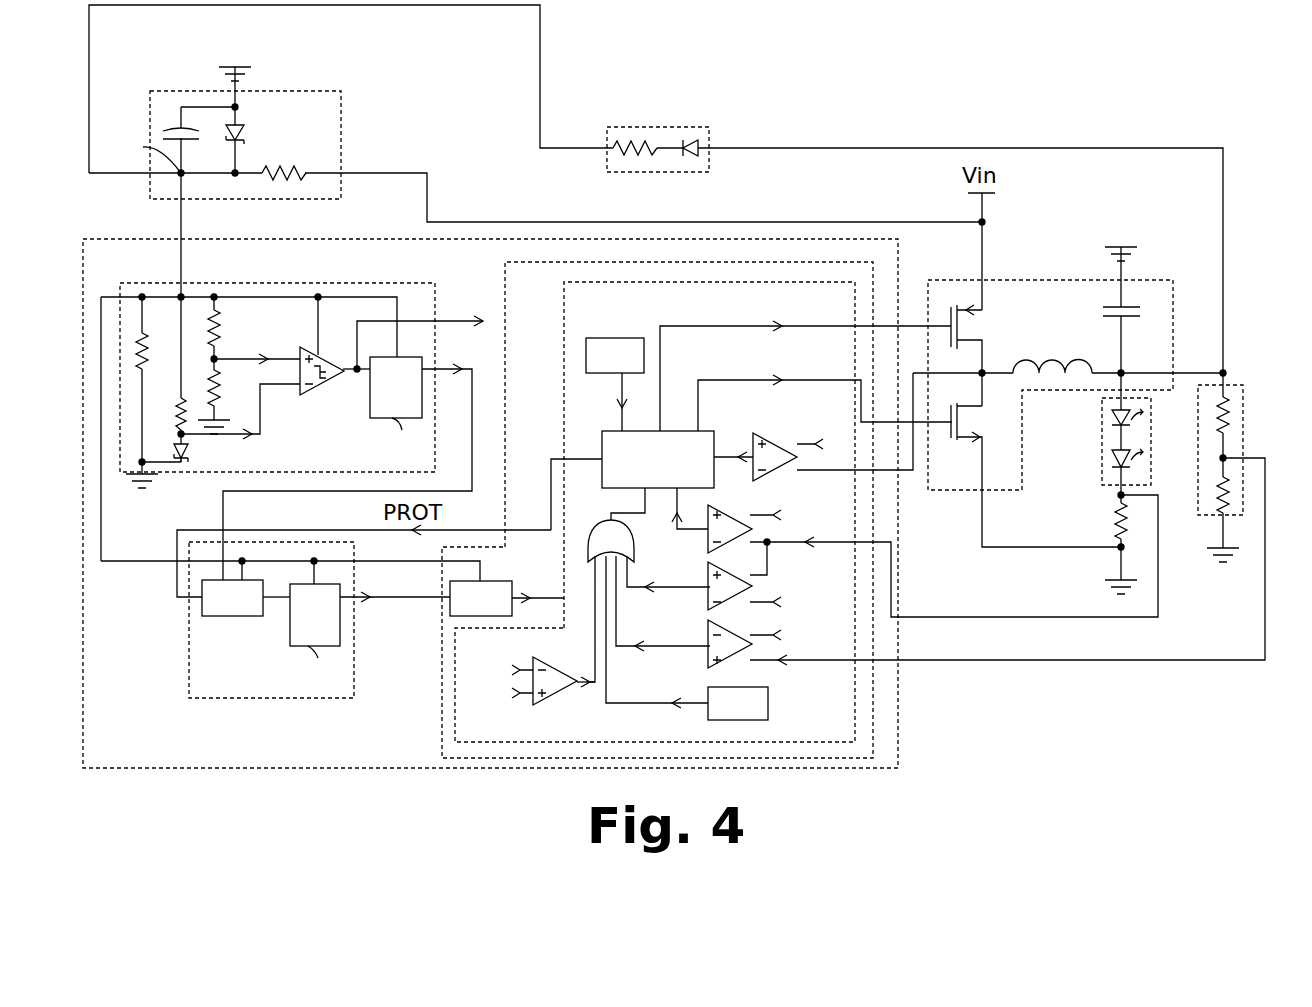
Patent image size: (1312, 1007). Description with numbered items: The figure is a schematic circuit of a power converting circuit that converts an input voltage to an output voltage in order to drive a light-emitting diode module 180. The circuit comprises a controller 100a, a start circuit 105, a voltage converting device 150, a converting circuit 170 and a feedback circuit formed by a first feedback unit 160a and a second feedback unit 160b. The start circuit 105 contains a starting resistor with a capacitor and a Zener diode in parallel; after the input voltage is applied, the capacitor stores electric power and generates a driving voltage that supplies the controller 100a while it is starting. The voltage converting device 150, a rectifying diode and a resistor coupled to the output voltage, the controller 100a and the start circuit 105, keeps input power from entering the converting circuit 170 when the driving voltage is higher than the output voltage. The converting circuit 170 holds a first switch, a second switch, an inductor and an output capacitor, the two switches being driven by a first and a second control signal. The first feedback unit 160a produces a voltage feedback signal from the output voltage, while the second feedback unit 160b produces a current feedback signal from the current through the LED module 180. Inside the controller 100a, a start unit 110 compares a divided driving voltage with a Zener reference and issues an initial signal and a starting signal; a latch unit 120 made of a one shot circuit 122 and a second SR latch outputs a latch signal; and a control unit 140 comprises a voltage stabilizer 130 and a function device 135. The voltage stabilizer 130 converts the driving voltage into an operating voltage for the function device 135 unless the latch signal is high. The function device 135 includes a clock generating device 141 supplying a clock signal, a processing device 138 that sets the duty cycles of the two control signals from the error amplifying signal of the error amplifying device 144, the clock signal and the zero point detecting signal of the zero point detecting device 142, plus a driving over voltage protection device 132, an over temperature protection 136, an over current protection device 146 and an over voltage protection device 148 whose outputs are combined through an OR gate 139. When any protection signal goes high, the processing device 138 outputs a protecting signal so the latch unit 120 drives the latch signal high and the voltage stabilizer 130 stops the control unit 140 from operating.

The controller 100a is at (137, 240).
The start circuit 105 is at (341, 130).
The start unit 110 is at (412, 290).
The latch unit 120 is at (290, 620).
The one shot circuit 122 is at (232, 598).
The voltage stabilizer 130 is at (508, 592).
The driving over voltage protection device 132 is at (562, 664).
The function device 135 is at (565, 383).
The over temperature protection 136 is at (738, 703).
The processing device 138 is at (751, 412).
The OR gate 139 is at (606, 535).
The control unit 140 is at (442, 748).
The clock generating device 141 is at (609, 384).
The zero point detecting device 142 is at (790, 437).
The error amplifying device 144 is at (726, 527).
The over current protection device 146 is at (722, 583).
The over voltage protection device 148 is at (728, 641).
The voltage converting device 150 is at (637, 127).
The first feedback unit 160a is at (1250, 428).
The second feedback unit 160b is at (1110, 522).
The converting circuit 170 is at (1150, 283).
The light-emitting diode module 180 is at (1102, 466).